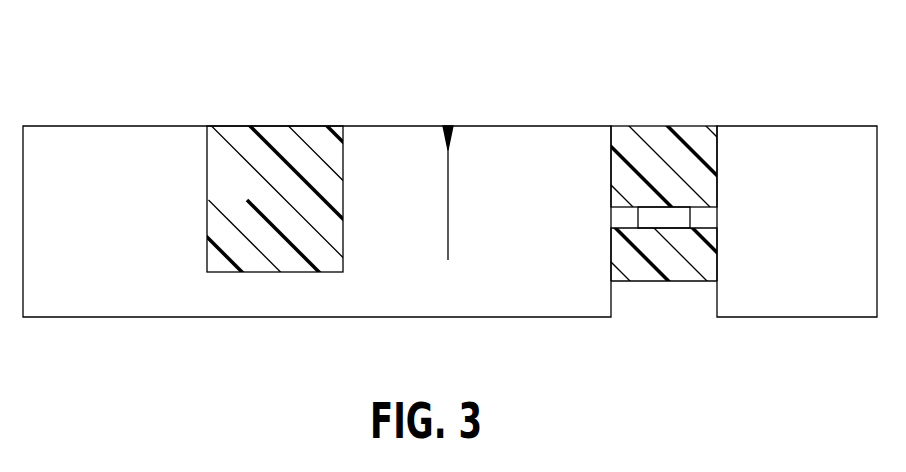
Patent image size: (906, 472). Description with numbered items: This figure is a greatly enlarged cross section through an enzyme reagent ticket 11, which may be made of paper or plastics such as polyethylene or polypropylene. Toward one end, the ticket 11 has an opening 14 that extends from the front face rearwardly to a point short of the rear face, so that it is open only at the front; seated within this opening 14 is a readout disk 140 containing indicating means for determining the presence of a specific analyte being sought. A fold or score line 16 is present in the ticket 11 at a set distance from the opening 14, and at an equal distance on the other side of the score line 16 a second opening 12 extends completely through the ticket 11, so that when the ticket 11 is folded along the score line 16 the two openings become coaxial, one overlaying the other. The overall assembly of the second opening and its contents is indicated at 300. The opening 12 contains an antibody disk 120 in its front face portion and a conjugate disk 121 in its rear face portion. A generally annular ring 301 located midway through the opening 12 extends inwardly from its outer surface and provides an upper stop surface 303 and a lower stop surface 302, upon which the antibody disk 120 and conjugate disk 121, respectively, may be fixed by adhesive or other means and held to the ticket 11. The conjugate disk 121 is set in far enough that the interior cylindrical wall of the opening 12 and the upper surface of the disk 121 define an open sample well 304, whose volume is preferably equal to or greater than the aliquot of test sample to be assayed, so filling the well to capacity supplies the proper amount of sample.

The ticket 11 is at (48, 125).
The opening 14 is at (223, 125).
The readout disk 140 is at (283, 147).
The fold or score line 16 is at (449, 126).
The contact structure 300 is at (557, 94).
The second opening 12 is at (702, 126).
The antibody disk 120 is at (655, 147).
The upper stop surface 303 is at (611, 182).
The annular ring 301 is at (704, 220).
The lower stop surface 302 is at (630, 232).
The conjugate disk 121 is at (670, 267).
The sample well 304 is at (677, 293).